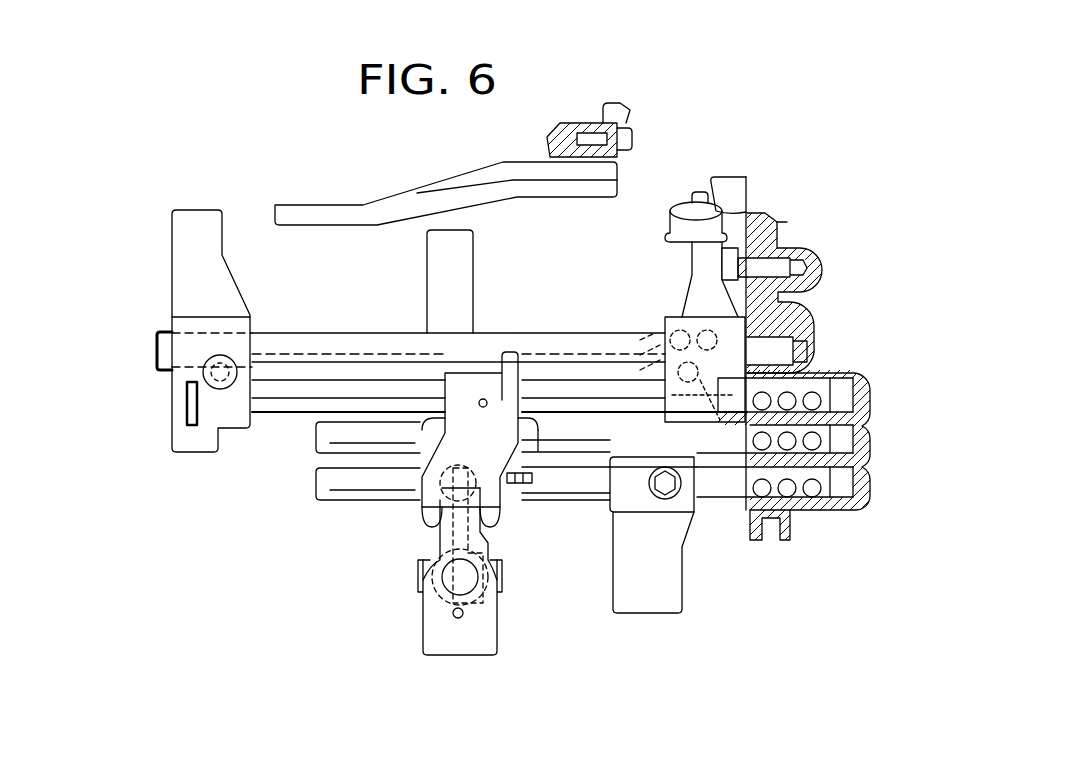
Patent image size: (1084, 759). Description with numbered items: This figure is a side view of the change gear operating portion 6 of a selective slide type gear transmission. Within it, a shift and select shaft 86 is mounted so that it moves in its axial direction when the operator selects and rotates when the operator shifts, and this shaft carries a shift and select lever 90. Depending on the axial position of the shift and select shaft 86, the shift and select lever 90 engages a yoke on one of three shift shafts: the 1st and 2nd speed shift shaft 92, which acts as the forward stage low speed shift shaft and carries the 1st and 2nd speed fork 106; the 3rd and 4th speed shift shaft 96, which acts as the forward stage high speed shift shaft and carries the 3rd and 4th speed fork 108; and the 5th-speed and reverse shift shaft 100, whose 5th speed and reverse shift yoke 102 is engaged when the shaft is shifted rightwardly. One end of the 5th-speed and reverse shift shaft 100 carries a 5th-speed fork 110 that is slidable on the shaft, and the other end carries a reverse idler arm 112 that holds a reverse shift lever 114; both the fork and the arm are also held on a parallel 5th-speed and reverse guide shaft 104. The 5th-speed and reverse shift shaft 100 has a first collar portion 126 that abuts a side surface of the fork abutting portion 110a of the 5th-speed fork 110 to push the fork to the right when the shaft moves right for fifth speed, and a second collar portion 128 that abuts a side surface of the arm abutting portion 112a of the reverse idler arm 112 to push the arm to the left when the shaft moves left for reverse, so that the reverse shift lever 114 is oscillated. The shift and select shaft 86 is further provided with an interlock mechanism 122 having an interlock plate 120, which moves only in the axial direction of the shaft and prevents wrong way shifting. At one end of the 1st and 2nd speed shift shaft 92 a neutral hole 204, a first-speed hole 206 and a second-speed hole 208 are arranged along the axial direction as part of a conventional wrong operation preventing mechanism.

The change gear operating portion 6 is at (176, 195).
The shift and select shaft 86 is at (456, 578).
The shift and select lever 90 is at (510, 520).
The 1st and 2nd speed shift shaft 92 is at (350, 490).
The 3rd and 4th speed shift shaft 96 is at (320, 440).
The 5th-speed and reverse shift shaft 100 is at (282, 415).
The 5th speed and reverse shift yoke 102 is at (440, 503).
The 5th-speed and reverse guide shaft 104 is at (343, 343).
The 1st and 2nd speed fork 106 is at (655, 595).
The 3rd and 4th speed fork 108 is at (455, 297).
The 5th-speed fork 110 is at (190, 237).
The fork abutting portion 110a is at (207, 400).
The reverse idler arm 112 is at (698, 265).
The arm abutting portion 112a is at (770, 355).
The reverse shift lever 114 is at (725, 190).
The interlock plate 120 is at (476, 656).
The interlock mechanism 122 is at (508, 617).
The first collar portion 126 is at (190, 430).
The second collar portion 128 is at (812, 372).
The neutral hole 204 is at (788, 493).
The first-speed hole 206 is at (750, 500).
The second-speed hole 208 is at (818, 498).